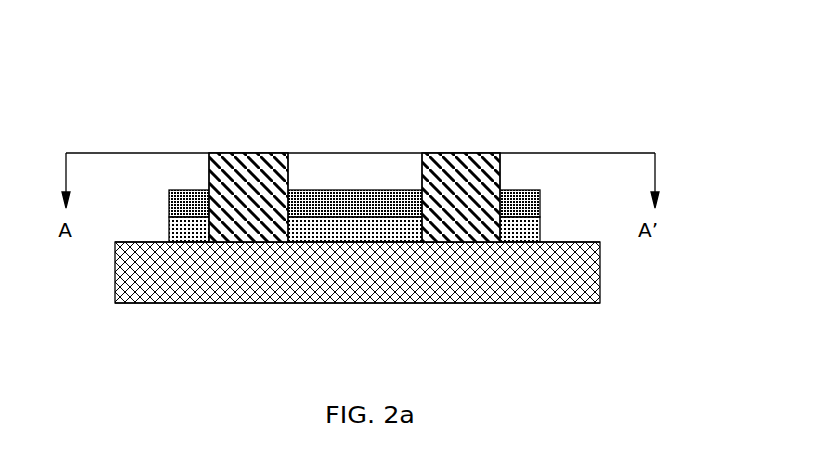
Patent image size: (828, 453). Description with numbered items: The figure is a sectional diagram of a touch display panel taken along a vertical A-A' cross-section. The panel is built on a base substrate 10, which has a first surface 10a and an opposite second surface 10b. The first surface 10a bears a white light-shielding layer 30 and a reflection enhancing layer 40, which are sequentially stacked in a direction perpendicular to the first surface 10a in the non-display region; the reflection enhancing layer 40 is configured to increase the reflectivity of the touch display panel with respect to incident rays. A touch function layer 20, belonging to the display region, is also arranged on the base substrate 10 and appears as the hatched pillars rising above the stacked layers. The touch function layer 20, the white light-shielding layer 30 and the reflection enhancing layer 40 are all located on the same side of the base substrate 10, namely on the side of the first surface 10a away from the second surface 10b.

The base substrate 10 is at (538, 290).
The first surface 10a is at (137, 241).
The second surface 10b is at (158, 303).
The touch function layer 20 is at (248, 195).
The white light-shielding layer 30 is at (189, 235).
The reflection enhancing layer 40 is at (357, 190).